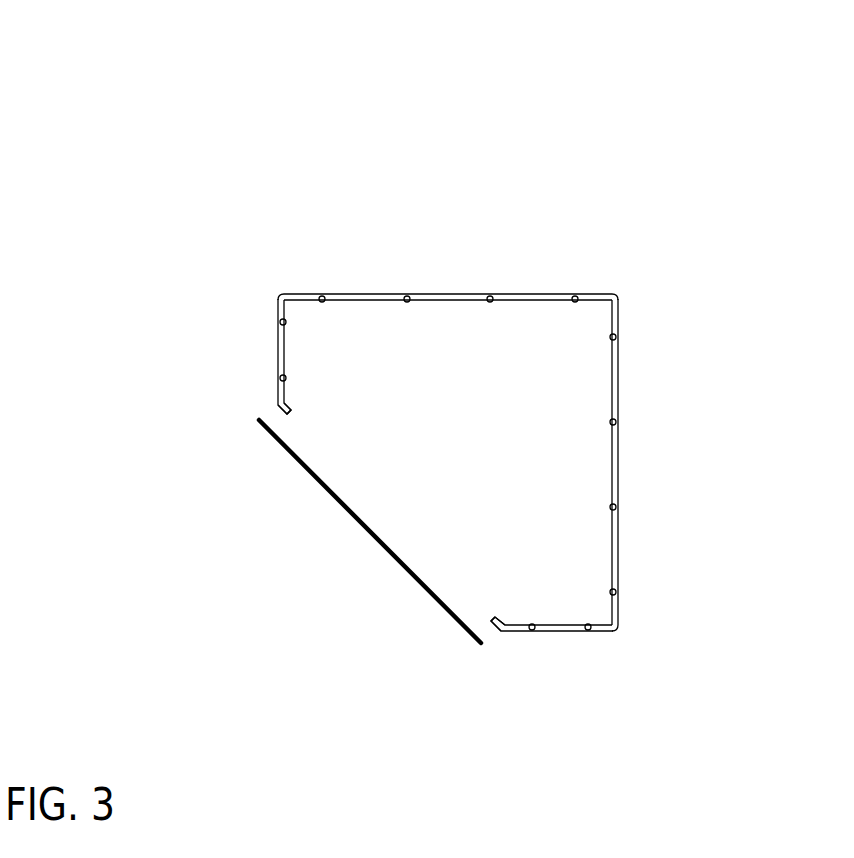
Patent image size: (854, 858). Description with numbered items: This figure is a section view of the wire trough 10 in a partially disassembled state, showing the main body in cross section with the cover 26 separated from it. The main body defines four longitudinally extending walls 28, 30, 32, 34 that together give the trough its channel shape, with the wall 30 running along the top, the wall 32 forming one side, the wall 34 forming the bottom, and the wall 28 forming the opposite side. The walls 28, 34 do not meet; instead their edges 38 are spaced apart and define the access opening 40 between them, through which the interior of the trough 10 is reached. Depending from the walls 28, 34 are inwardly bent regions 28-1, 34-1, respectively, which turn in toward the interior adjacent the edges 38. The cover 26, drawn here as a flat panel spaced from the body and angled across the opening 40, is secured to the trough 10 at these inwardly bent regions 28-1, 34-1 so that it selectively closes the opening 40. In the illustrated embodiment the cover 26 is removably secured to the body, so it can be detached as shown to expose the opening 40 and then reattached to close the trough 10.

The trough 10 is at (161, 121).
The cover 26 is at (355, 528).
The wall 28 is at (276, 354).
The inwardly bent region 28-1 is at (288, 408).
The wall 30 is at (452, 291).
The wall 32 is at (620, 488).
The wall 34 is at (570, 632).
The inwardly bent region 34-1 is at (500, 619).
The edges 38 is at (292, 417).
The access opening 40 is at (408, 474).